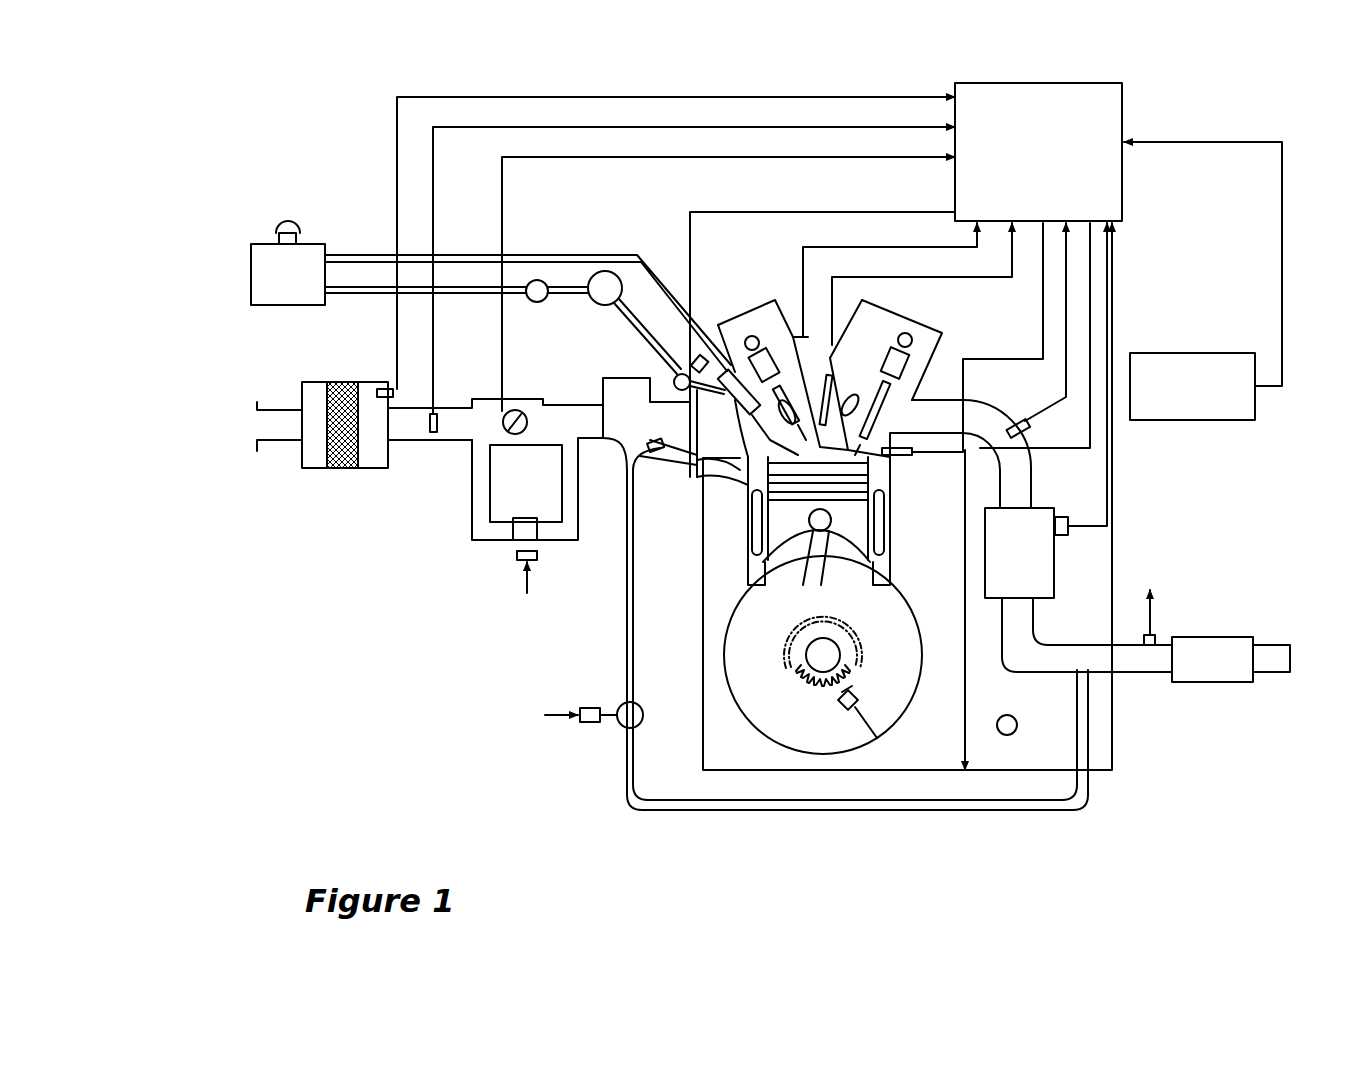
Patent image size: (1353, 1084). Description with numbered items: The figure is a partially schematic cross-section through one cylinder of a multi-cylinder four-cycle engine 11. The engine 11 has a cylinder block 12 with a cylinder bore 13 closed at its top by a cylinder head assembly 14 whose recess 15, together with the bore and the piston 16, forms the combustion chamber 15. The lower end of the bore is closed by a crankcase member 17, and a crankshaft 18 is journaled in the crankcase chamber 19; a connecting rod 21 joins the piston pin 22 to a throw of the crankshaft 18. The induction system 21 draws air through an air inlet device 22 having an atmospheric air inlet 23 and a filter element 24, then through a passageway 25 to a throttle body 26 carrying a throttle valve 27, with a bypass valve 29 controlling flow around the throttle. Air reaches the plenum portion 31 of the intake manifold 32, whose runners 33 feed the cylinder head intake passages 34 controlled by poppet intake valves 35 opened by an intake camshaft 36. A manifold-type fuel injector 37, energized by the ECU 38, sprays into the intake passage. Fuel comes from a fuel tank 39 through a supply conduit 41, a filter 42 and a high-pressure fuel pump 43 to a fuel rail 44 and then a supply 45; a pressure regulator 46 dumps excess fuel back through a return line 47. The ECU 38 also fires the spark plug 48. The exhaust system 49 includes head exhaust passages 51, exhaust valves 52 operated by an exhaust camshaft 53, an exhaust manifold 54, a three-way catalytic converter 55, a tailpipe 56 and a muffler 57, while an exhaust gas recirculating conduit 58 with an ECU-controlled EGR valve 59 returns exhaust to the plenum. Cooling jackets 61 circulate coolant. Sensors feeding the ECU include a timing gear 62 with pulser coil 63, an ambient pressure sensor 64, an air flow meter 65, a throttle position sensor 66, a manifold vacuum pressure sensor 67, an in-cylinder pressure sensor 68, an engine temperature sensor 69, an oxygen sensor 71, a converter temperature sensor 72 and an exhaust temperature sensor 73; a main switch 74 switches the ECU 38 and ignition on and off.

The engine 11 is at (1210, 540).
The cylinder block 12 is at (885, 472).
The cylinder bore 13 is at (748, 565).
The cylinder head assembly 14 is at (945, 335).
The cylinder head recess 15 is at (893, 570).
The piston 16 is at (802, 580).
The crankcase member 17 is at (918, 683).
The crankshaft 18 is at (806, 655).
The crankcase chamber 19 is at (912, 648).
The connecting rod 21 is at (827, 555).
The piston pin 22 is at (305, 380).
The atmospheric air inlet 23 is at (255, 450).
The filter element 24 is at (325, 470).
The passageway 25 is at (410, 428).
The throttle body 26 is at (502, 445).
The throttle valve 27 is at (520, 412).
The bypass valve 29 is at (480, 546).
The plenum portion 31 is at (612, 462).
The intake manifold 32 is at (605, 378).
The runner 33 is at (688, 460).
The cylinder head intake passage 34 is at (680, 470).
The intake valve 35 is at (748, 522).
The intake camshaft 36 is at (745, 345).
The fuel injector 37 is at (713, 470).
The ECU 38 is at (1000, 82).
The fuel tank 39 is at (253, 245).
The supply conduit 41 is at (364, 293).
The filter 42 is at (538, 302).
The high-pressure fuel pump 43 is at (600, 305).
The fuel rail 44 is at (678, 400).
The supply 45 is at (686, 495).
The pressure regulator 46 is at (688, 298).
The return line 47 is at (370, 255).
The spark plug 48 is at (828, 386).
The exhaust system 49 is at (1062, 495).
The exhaust passage 51 is at (878, 445).
The exhaust valve 52 is at (880, 392).
The exhaust camshaft 53 is at (906, 335).
The exhaust manifold 54 is at (1028, 432).
The catalytic converter 55 is at (1054, 570).
The tailpipe 56 is at (1128, 672).
The muffler 57 is at (1223, 637).
The exhaust gas recirculating conduit 58 is at (858, 812).
The EGR valve 59 is at (618, 730).
The cooling jacket 61 is at (843, 402).
The timing gear 62 is at (855, 675).
The pulser coil 63 is at (847, 720).
The pressure sensor 64 is at (377, 390).
The air flow meter 65 is at (436, 412).
The throttle position sensor 66 is at (500, 424).
The pressure sensor 67 is at (652, 448).
The in-cylinder pressure sensor 68 is at (773, 336).
The temperature sensor 69 is at (912, 452).
The oxygen sensor 71 is at (1010, 420).
The converter temperature sensor 72 is at (1070, 520).
The temperature sensor 73 is at (1155, 632).
The main switch 74 is at (1225, 421).